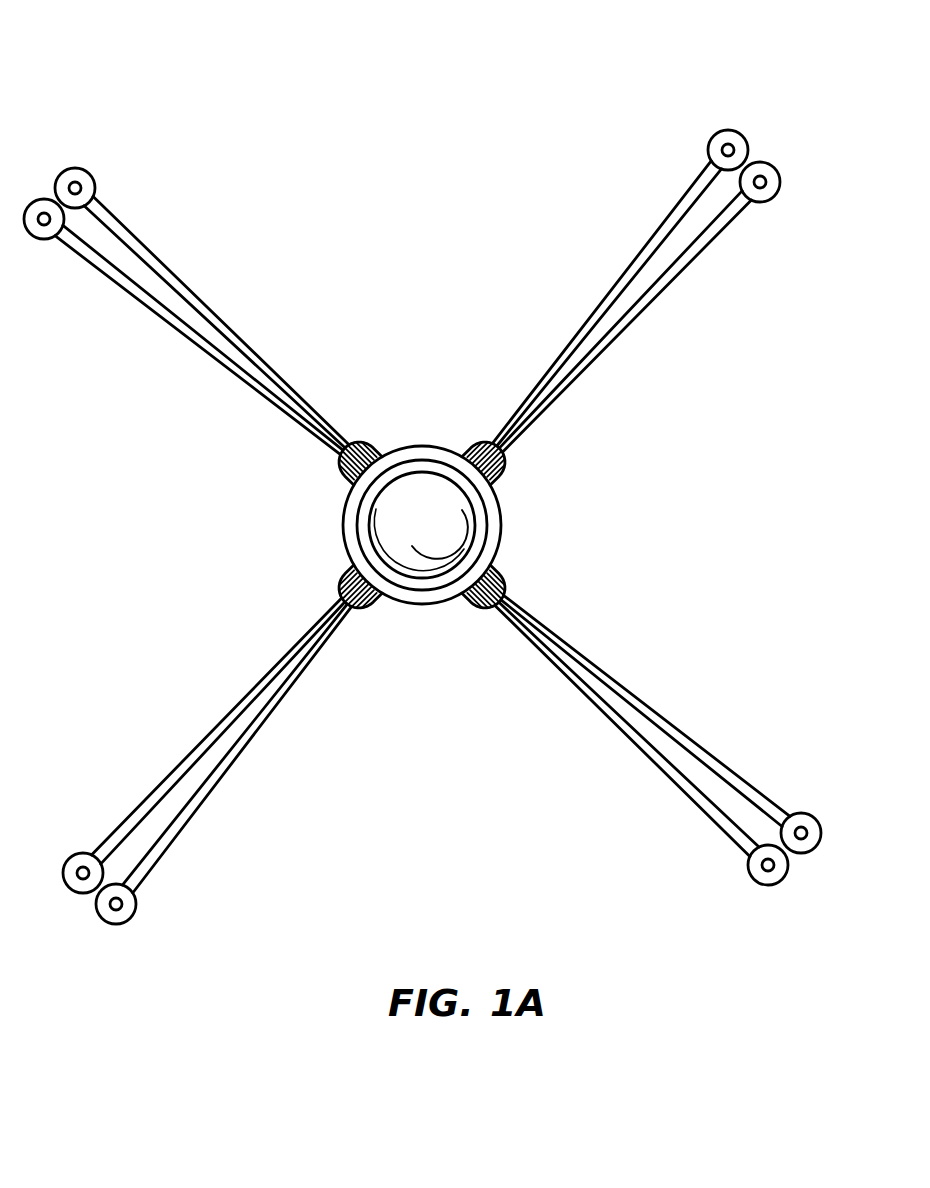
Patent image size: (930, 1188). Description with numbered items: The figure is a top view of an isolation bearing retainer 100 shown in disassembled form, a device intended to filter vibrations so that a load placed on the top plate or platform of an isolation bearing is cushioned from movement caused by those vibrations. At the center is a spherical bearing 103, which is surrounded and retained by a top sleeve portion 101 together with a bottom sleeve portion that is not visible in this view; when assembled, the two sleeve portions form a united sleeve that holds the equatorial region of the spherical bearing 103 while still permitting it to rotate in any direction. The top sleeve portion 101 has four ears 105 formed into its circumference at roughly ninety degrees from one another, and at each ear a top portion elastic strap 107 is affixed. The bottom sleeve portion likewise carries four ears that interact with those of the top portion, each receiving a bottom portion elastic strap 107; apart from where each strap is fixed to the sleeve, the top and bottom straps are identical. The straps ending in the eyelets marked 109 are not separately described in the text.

The isolation bearing retainer 100 is at (332, 248).
The top sleeve portion 101 is at (406, 452).
The spherical bearing 103 is at (417, 500).
The ears 105 is at (347, 480).
The top portion elastic strap 107 is at (50, 239).
The second leg 109 is at (91, 173).